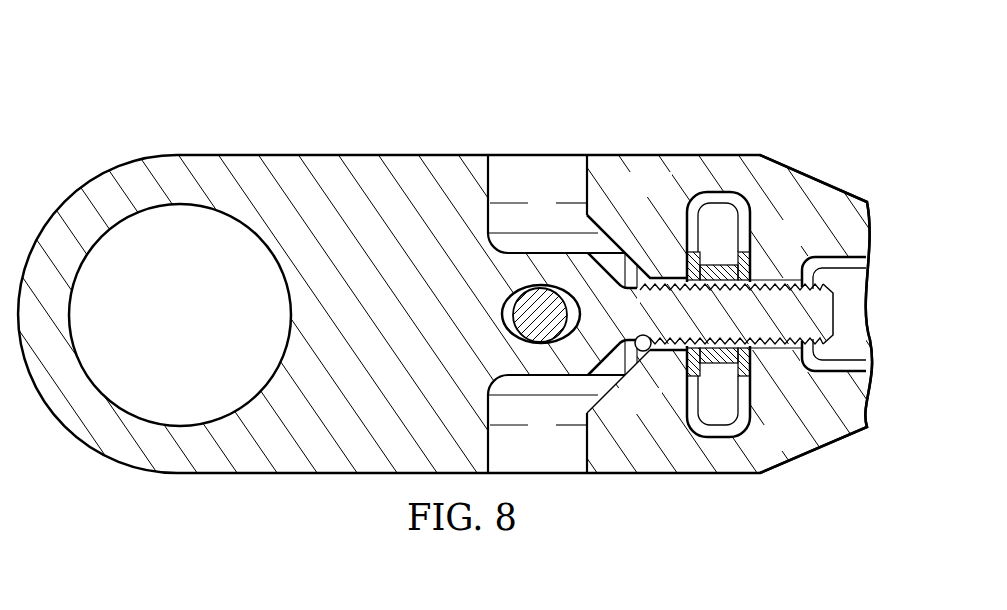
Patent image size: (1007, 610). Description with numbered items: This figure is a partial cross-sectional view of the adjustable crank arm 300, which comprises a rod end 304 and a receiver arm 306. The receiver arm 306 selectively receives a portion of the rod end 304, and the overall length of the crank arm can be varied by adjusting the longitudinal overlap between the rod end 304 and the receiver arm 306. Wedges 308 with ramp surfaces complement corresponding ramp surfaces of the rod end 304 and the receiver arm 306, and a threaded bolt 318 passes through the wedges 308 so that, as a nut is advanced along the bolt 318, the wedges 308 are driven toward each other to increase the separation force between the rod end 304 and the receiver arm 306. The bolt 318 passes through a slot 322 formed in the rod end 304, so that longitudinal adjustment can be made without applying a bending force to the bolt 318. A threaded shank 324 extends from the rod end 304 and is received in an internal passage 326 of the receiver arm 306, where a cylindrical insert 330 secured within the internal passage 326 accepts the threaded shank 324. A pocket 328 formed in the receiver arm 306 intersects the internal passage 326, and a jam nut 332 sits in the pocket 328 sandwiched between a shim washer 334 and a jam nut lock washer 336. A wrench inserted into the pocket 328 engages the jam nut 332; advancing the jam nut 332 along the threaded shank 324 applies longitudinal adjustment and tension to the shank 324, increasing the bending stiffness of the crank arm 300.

The adjustable crank arm 300 is at (172, 72).
The rod end 304 is at (246, 154).
The receiver arm 306 is at (828, 182).
The wedges 308 is at (131, 176).
The threaded bolt 318 is at (532, 302).
The slot 322 is at (503, 306).
The threaded shank 324 is at (823, 308).
The internal passage 326 is at (647, 351).
The pocket 328 is at (720, 213).
The cylindrical insert 330 is at (796, 281).
The jam nut 332 is at (717, 262).
The shim washer 334 is at (743, 383).
The jam nut lock washer 336 is at (718, 436).